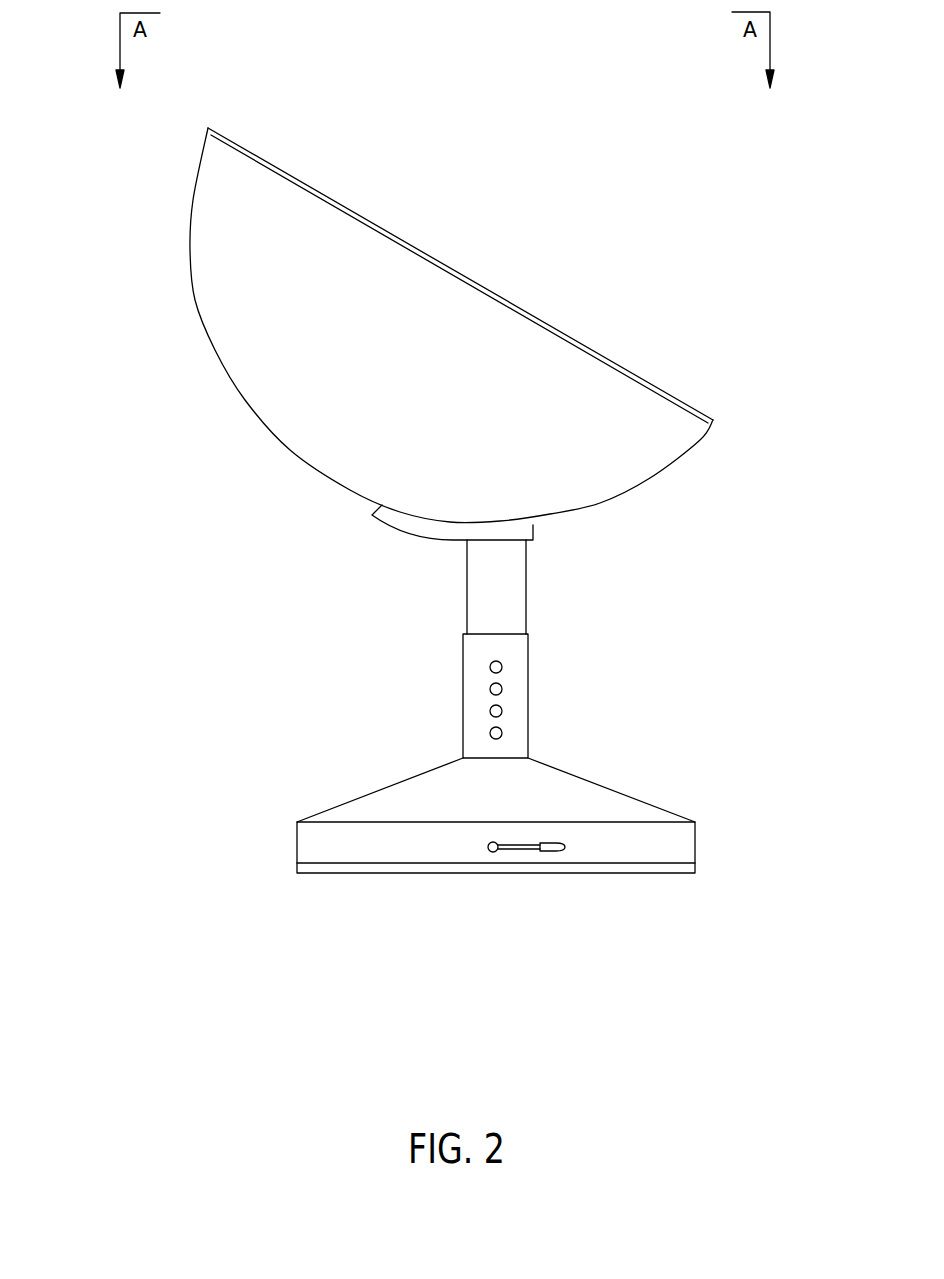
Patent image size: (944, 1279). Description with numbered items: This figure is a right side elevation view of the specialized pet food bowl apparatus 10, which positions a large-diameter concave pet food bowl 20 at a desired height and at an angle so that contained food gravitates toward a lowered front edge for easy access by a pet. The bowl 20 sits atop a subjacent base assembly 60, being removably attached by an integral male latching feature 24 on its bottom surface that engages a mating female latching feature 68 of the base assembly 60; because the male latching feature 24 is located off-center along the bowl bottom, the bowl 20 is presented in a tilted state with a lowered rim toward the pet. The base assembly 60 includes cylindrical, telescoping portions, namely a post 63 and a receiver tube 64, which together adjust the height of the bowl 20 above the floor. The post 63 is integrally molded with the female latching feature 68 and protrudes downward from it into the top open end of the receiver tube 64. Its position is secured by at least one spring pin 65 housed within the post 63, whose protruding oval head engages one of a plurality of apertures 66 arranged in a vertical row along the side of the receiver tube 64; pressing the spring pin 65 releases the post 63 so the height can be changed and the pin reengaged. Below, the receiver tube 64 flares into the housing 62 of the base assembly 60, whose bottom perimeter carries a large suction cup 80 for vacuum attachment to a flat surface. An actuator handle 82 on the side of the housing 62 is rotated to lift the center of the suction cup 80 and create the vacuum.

The specialized pet food bowl apparatus 10 is at (560, 188).
The pet food bowl 20 is at (425, 248).
The male latching feature 24 is at (395, 519).
The female latching feature 68 is at (452, 522).
The base assembly 60 is at (529, 667).
The post 63 is at (513, 620).
The receiver tube 64 is at (518, 707).
The spring pin 65 is at (488, 666).
The apertures 66 is at (488, 733).
The housing 62 is at (683, 836).
The suction cup 80 is at (504, 866).
The actuator handle 82 is at (491, 845).